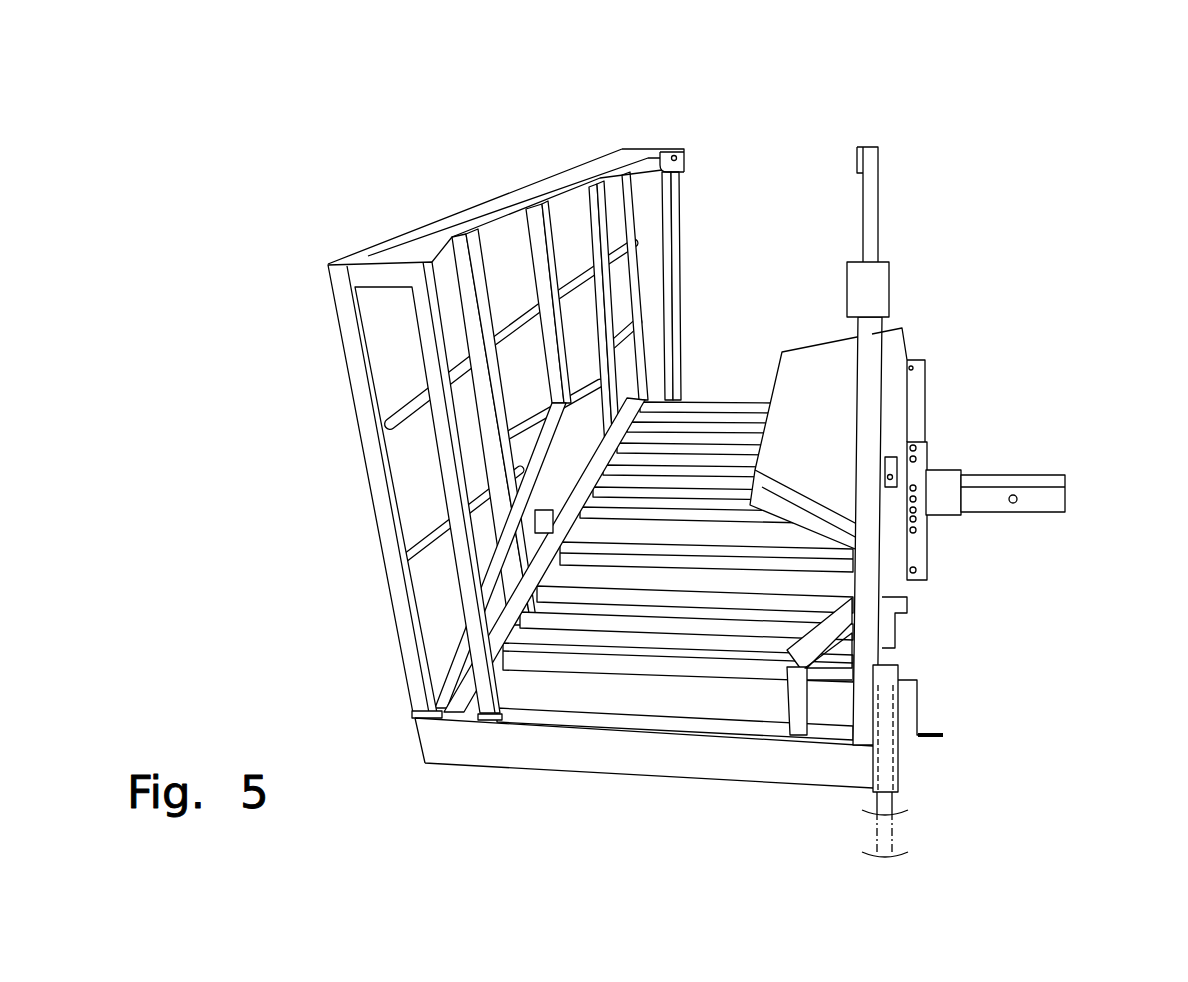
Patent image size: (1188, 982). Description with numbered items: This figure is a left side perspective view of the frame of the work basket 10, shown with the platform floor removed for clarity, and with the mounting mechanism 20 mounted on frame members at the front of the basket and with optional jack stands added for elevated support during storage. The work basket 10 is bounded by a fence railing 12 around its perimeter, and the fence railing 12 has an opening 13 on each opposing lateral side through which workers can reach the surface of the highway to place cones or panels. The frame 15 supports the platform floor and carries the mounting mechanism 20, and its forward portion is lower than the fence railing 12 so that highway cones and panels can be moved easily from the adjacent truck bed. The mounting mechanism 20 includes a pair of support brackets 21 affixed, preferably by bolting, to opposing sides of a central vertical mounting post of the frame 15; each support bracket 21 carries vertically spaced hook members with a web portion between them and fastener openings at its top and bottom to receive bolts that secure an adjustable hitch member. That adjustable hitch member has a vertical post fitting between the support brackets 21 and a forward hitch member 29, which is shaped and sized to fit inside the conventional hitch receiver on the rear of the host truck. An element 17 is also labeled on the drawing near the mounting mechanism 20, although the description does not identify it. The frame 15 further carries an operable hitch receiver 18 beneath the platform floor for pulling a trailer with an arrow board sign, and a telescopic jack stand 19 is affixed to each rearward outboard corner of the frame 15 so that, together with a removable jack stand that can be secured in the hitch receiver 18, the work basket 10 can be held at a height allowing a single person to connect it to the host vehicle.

The work basket 10 is at (998, 218).
The fence railing 12 is at (513, 212).
The opening 13 is at (770, 136).
The frame 15 is at (690, 773).
The mounting plate 17 is at (927, 540).
The hitch receiver 18 is at (536, 532).
The jack stand 19 is at (885, 781).
The mounting mechanism 20 is at (1030, 426).
The support bracket 21 is at (928, 440).
The forward hitch member 29 is at (1052, 500).